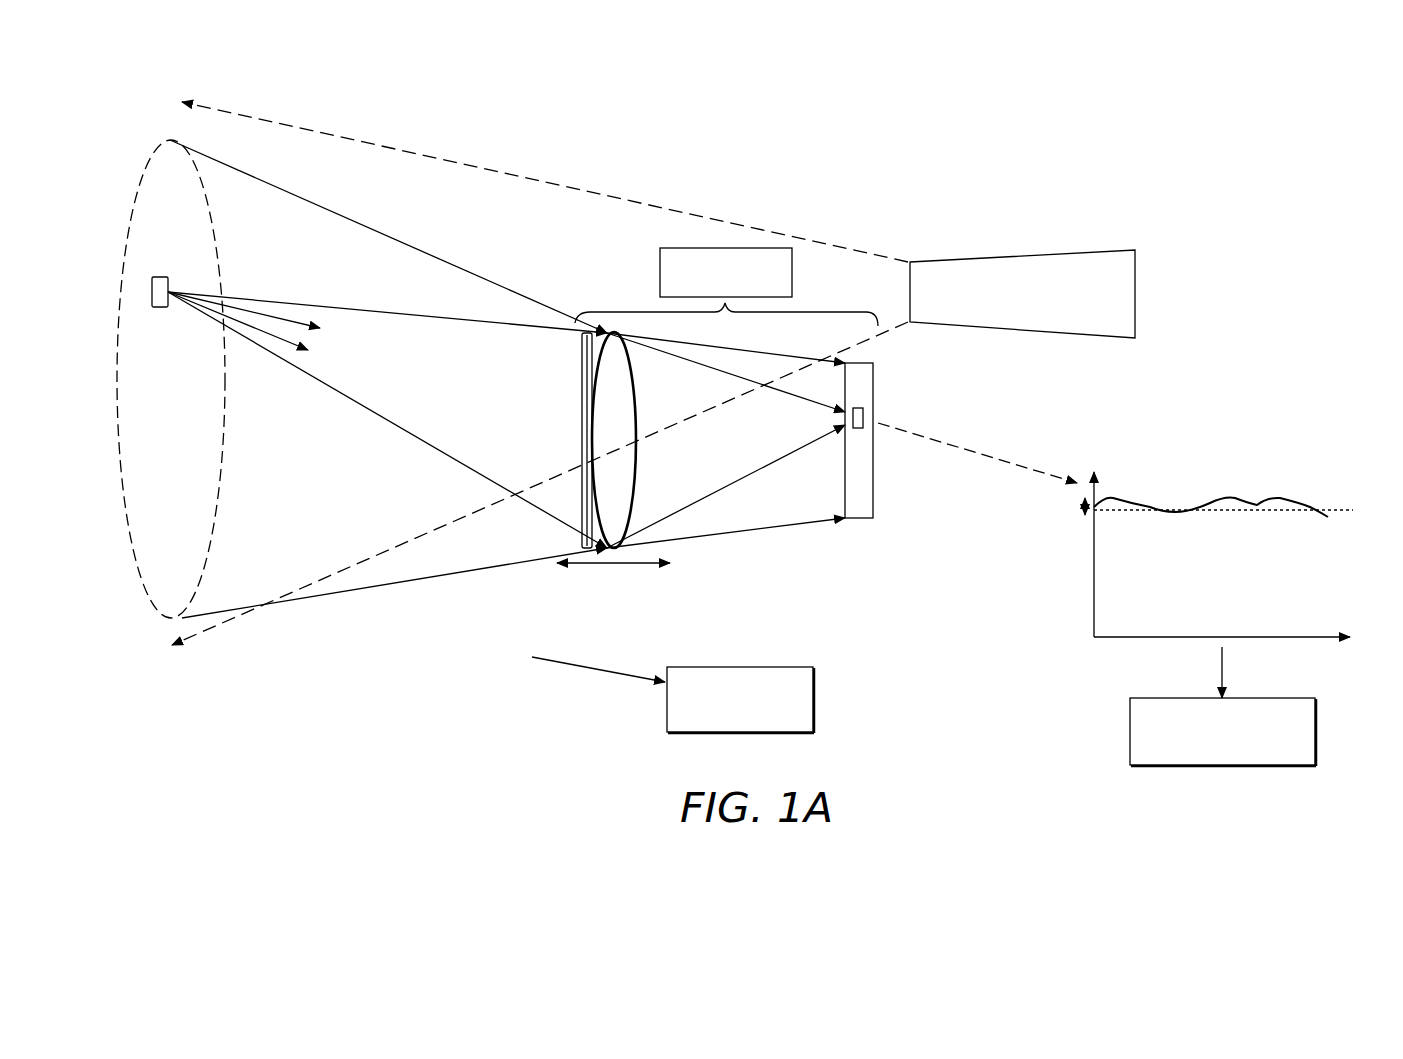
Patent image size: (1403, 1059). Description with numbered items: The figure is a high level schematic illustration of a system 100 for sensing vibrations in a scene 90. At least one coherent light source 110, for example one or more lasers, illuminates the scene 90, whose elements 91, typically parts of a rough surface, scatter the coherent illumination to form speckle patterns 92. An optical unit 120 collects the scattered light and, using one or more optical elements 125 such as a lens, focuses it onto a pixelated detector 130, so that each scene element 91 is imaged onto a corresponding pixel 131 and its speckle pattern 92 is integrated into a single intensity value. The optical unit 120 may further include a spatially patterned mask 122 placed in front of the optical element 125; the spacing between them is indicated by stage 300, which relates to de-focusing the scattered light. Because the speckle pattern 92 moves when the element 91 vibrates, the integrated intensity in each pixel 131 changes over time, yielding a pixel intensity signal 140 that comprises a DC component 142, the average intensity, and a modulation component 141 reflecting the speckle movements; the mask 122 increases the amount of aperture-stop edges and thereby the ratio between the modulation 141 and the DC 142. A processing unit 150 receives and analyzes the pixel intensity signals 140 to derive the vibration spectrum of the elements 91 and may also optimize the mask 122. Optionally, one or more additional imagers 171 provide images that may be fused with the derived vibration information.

The system 100 is at (849, 179).
The scene 90 is at (220, 488).
The element 91 is at (158, 277).
The speckle pattern 92 is at (288, 322).
The coherent light source 110 is at (1080, 251).
The optical unit 120 is at (660, 263).
The spatially patterned mask 122 is at (582, 378).
The optical element 125 is at (637, 453).
The pixelated detector 130 is at (845, 496).
The pixel 131 is at (870, 413).
The pixel intensity signal 140 is at (1255, 472).
The modulation component 141 is at (1082, 503).
The DC component 142 is at (1237, 512).
The processing unit 150 is at (1317, 712).
The imager 171 is at (781, 667).
The de-focusing stage 300 is at (613, 568).